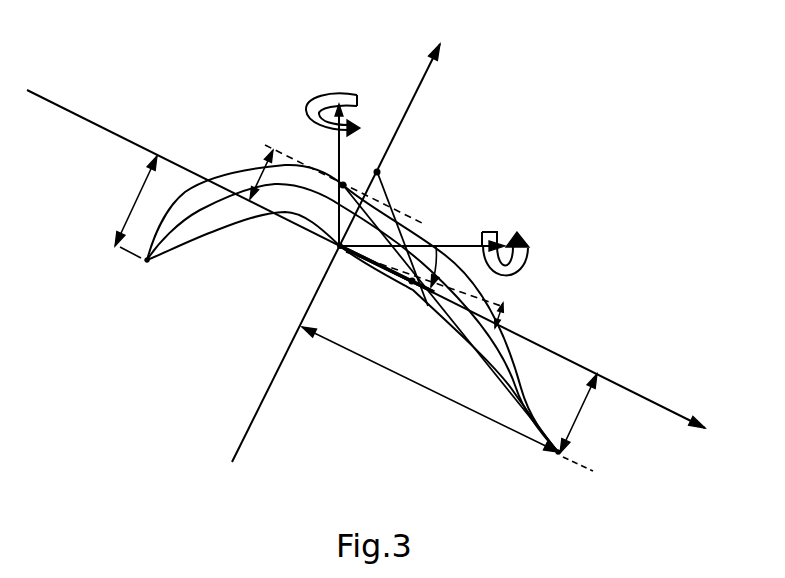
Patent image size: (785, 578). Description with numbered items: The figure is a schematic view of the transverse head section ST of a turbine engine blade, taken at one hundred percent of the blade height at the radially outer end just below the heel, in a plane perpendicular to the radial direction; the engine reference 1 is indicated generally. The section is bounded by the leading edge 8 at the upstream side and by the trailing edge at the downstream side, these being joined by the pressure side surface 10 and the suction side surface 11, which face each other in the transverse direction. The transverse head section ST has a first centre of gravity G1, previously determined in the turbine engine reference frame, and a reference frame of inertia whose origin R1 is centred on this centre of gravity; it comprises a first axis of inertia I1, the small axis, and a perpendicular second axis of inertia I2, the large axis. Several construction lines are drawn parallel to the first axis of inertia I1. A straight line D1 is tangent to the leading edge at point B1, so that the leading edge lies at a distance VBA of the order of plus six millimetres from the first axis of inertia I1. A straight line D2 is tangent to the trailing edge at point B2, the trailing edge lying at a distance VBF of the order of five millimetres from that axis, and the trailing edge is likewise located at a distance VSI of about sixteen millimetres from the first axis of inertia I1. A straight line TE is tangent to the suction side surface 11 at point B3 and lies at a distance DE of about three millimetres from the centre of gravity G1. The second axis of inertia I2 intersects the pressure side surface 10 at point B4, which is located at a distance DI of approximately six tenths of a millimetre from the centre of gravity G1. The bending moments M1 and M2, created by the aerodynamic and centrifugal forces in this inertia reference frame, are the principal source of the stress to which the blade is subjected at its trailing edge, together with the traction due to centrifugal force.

The turbomachine / engine 1 is at (510, 118).
The leading edge 8 is at (147, 262).
The pressure side surface 10 is at (507, 388).
The suction side surface 11 is at (515, 373).
The first axis of inertia I1 is at (662, 405).
The second axis of inertia I2 is at (415, 90).
The first centre of gravity G1 is at (340, 250).
The origin of the reference frame of inertia R1 is at (387, 269).
The bending moment M1 is at (333, 156).
The bending moment M2 is at (459, 253).
The distance DI is at (500, 316).
The distance VBA is at (135, 197).
The distance VBF is at (580, 407).
The distance VSI is at (335, 345).
The straight line D1 is at (131, 254).
The straight line D2 is at (577, 470).
The point B1 is at (147, 264).
The point B2 is at (556, 455).
The point B3 is at (378, 171).
The point B4 is at (340, 246).
The straight line TE is at (275, 166).
The distance DE is at (262, 167).
The transverse head section ST is at (180, 238).